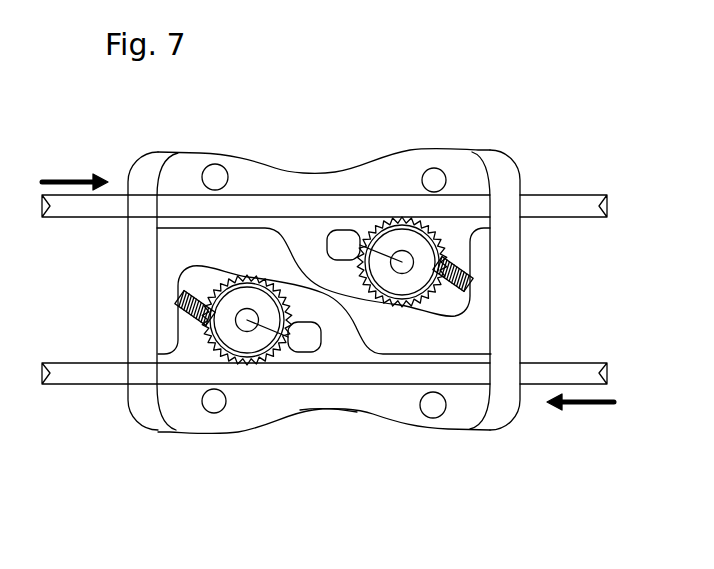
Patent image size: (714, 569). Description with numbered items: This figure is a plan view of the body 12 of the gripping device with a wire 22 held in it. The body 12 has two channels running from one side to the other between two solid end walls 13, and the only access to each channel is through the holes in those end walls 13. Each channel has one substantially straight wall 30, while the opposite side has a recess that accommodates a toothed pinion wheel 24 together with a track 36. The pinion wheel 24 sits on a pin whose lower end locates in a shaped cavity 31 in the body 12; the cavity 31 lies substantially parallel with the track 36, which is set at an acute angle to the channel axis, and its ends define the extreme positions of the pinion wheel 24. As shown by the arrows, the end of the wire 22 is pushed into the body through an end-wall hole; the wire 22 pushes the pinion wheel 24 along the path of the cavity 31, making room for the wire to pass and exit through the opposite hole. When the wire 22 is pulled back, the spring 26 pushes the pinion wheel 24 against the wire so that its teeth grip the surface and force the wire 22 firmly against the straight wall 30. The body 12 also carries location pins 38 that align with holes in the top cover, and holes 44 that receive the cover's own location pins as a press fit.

The body 12 is at (313, 188).
The end walls 13 is at (142, 282).
The wire 22 is at (543, 202).
The toothed pinion wheel 24 is at (398, 218).
The spring 26 is at (462, 238).
The straight wall 30 is at (350, 385).
The shaped cavity 31 is at (338, 232).
The track 36 is at (335, 228).
The location pins 38 is at (443, 170).
The holes 44 is at (218, 165).